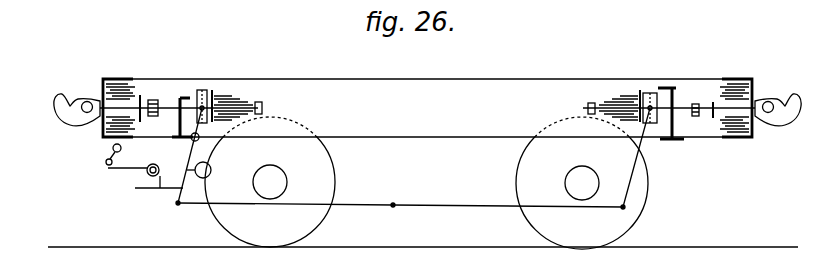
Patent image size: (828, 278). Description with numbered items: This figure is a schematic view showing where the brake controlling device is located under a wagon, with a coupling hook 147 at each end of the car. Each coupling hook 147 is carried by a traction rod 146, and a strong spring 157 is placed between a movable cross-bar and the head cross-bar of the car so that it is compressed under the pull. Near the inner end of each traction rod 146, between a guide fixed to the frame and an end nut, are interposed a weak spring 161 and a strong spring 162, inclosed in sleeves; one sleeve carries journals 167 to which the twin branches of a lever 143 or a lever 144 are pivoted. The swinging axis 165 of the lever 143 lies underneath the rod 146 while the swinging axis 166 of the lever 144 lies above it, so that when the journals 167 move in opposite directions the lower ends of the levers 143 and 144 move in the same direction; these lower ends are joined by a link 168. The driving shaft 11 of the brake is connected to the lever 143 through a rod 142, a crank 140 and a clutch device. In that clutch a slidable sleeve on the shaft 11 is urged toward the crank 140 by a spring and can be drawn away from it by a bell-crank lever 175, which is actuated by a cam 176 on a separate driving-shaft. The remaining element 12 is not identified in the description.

The driving shaft 11 is at (164, 176).
The ring 12 is at (188, 166).
The crank 140 is at (147, 188).
The rod 142 is at (267, 208).
The lever 143 is at (197, 155).
The lever 144 is at (633, 162).
The traction rod 146 is at (153, 115).
The coupling hook 147 is at (67, 126).
The strong spring 157 is at (128, 86).
The weak spring 161 is at (186, 96).
The strong spring 162 is at (248, 103).
The swinging axis 165 is at (179, 142).
The swinging axis 166 is at (650, 92).
The journals 167 is at (203, 92).
The link 168 is at (383, 192).
The bell-crank lever 175 is at (130, 155).
The cam 176 is at (106, 166).